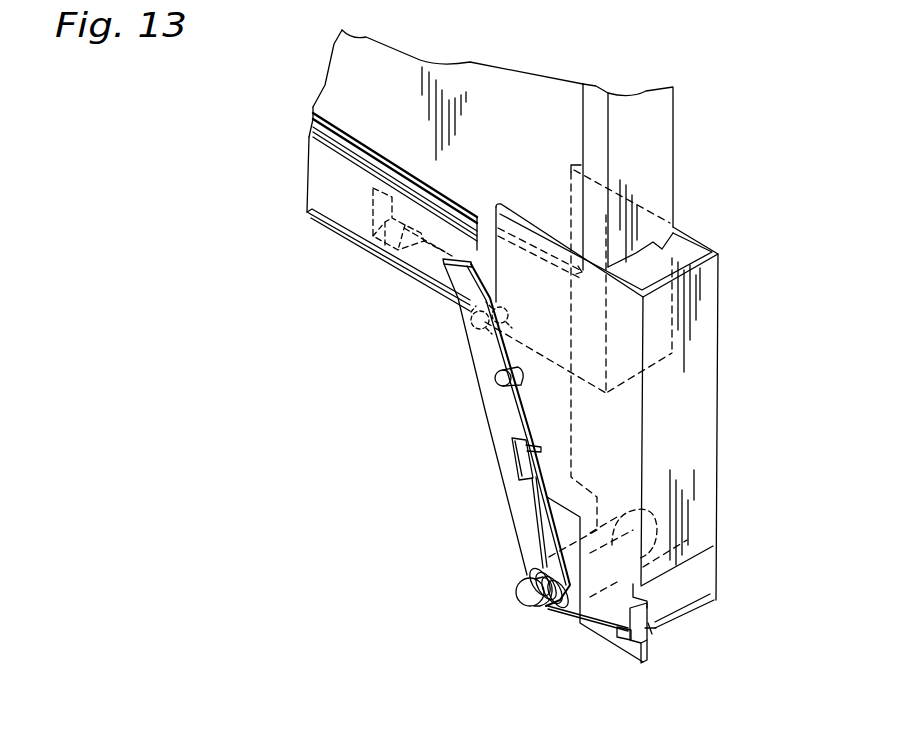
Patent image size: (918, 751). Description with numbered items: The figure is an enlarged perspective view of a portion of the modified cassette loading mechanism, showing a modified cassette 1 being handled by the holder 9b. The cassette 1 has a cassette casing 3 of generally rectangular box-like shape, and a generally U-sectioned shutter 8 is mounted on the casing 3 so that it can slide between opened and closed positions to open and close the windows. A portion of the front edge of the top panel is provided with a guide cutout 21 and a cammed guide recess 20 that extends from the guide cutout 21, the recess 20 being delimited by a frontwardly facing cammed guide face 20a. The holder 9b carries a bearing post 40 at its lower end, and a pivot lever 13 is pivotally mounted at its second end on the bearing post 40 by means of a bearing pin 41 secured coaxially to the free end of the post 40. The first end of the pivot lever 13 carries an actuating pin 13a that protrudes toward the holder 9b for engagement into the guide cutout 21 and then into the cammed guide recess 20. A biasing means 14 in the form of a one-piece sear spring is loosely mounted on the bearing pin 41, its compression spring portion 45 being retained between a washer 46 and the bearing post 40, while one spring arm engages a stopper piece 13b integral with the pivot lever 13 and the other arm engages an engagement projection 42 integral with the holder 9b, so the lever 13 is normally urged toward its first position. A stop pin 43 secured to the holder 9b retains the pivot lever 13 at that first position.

The modified cassette 1 is at (675, 128).
The cassette casing 3 is at (522, 107).
The shutter 8 is at (333, 207).
The holder 9b is at (673, 412).
The pivot lever 13 is at (500, 423).
The actuating pin 13a is at (468, 333).
The stopper piece 13b is at (517, 463).
The biasing means 14 is at (532, 513).
The cammed guide recess 20 is at (367, 232).
The cammed guide face 20a is at (422, 243).
The guide cutout 21 is at (493, 343).
The bearing post 40 is at (603, 552).
The bearing pin 41 is at (518, 602).
The engagement projection 42 is at (638, 662).
The stop pin 43 is at (497, 384).
The compression spring portion 45 is at (553, 604).
The washer 46 is at (543, 612).